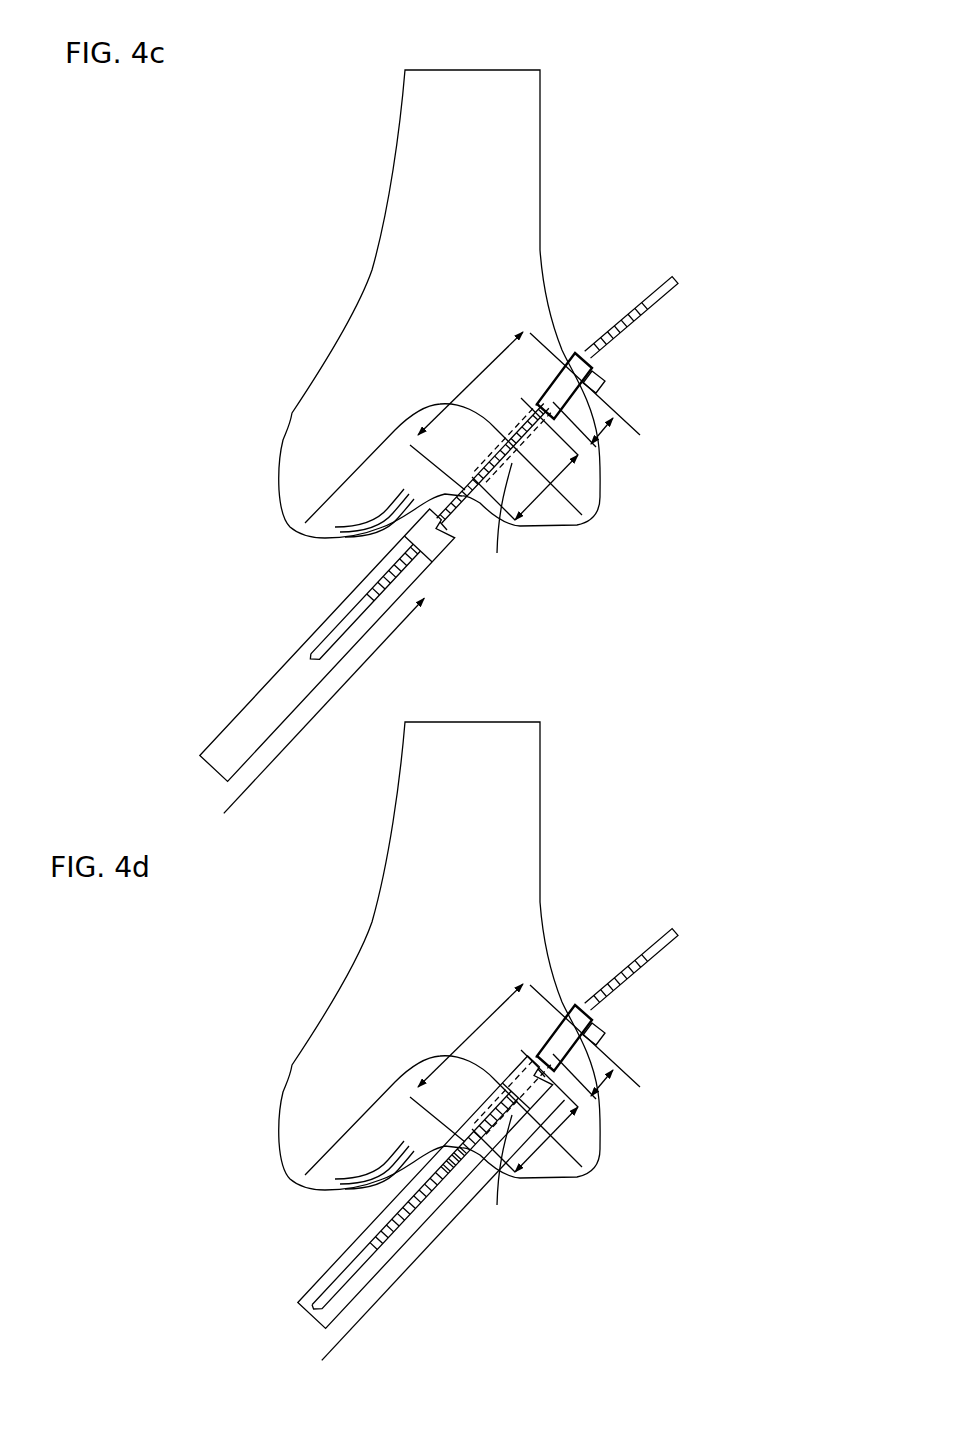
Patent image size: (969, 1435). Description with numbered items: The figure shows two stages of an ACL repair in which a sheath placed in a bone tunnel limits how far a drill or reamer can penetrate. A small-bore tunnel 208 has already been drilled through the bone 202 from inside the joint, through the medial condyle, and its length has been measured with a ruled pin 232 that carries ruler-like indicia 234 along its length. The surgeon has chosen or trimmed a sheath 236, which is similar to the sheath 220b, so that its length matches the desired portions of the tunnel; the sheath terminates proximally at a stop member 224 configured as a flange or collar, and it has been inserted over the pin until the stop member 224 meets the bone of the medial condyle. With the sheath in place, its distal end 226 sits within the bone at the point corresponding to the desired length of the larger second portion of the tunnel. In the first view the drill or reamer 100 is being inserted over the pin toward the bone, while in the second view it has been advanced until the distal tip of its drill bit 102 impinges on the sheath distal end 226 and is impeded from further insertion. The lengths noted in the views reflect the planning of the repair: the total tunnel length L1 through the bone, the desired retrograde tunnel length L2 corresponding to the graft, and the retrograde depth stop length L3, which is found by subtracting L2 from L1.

In FIG. 4C, the drill or reamer 100 is at (333, 613).
In FIG. 4D, the drill or reamer 100 is at (333, 1263).
In FIG. 4C, the drill bit 102 is at (455, 540).
In FIG. 4D, the drill bit 102 is at (520, 1078).
In FIG. 4C, the bone 202 is at (326, 358).
In FIG. 4D, the bone 202 is at (326, 1008).
In FIG. 4C, the tunnel 208 is at (514, 519).
In FIG. 4D, the tunnel 208 is at (514, 1170).
In FIG. 4C, the stop member 224 is at (577, 352).
In FIG. 4D, the stop member 224 is at (577, 1002).
In FIG. 4C, the distal end of the sheath 226 is at (522, 400).
In FIG. 4D, the distal end of the sheath 226 is at (522, 1050).
In FIG. 4C, the ruled pin 232 is at (634, 322).
In FIG. 4D, the ruled pin 232 is at (634, 972).
In FIG. 4C, the indicia 234 is at (478, 505).
In FIG. 4D, the indicia 234 is at (478, 1155).
In FIG. 4C, the sheath 236 is at (618, 388).
In FIG. 4D, the sheath 220b is at (618, 1040).
In FIG. 4C, the total tunnel length L1 is at (522, 336).
In FIG. 4D, the total tunnel length L1 is at (522, 986).
In FIG. 4C, the retrograde tunnel length L2 is at (597, 449).
In FIG. 4D, the retrograde tunnel length L2 is at (597, 1099).
In FIG. 4C, the retrograde depth stop length L3 is at (607, 437).
In FIG. 4D, the retrograde depth stop length L3 is at (607, 1087).